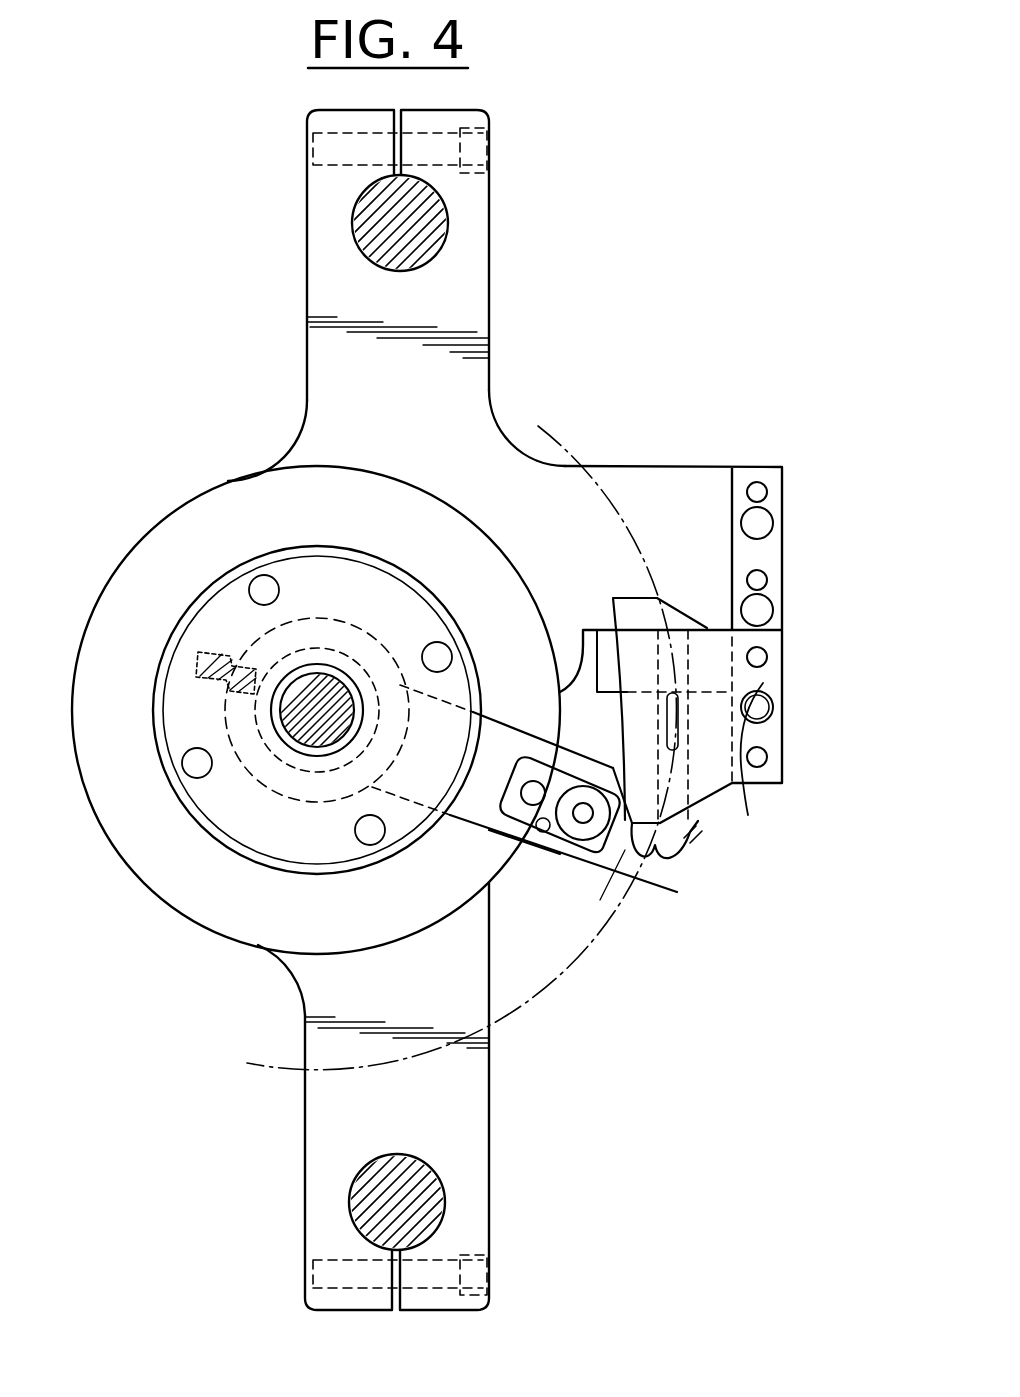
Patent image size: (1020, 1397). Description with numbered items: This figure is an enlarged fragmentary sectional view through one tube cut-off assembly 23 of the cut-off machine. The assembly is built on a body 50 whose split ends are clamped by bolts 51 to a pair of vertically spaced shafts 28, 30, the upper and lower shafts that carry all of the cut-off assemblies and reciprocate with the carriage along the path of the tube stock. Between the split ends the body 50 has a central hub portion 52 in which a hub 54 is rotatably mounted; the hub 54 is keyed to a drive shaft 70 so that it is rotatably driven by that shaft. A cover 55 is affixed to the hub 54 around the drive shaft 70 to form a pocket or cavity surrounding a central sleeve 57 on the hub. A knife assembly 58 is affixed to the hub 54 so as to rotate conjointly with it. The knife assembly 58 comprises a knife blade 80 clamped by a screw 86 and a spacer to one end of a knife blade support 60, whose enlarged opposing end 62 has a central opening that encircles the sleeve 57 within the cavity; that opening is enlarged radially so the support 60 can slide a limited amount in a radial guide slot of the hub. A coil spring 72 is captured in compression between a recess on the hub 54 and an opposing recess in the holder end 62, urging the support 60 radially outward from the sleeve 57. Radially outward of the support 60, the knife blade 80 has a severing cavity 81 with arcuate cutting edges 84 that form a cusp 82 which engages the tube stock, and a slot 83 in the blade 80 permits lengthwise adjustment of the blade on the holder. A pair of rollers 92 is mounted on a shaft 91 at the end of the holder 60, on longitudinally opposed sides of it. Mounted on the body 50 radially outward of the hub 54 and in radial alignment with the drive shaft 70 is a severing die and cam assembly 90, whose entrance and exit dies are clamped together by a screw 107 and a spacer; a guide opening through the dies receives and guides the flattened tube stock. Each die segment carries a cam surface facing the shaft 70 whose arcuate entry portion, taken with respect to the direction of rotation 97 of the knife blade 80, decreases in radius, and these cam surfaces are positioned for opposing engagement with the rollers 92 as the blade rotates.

The tube cut-off assembly 23 is at (550, 398).
The shaft 28 is at (430, 237).
The shaft 30 is at (433, 1203).
The body 50 is at (304, 399).
The bolt 51 is at (490, 149).
The central hub portion 52 is at (177, 527).
The hub 54 is at (230, 793).
The cover 55 is at (263, 848).
The central sleeve 57 is at (362, 670).
The knife assembly 58 is at (499, 845).
The knife blade support 60 is at (494, 733).
The opposing end 62 is at (298, 618).
The drive shaft 70 is at (316, 735).
The coil spring 72 is at (219, 650).
The knife blade 80 is at (678, 893).
The severing cavity 81 is at (680, 830).
The cusp 82 is at (645, 872).
The slot 83 is at (505, 788).
The arcuate cutting edges 84 is at (595, 891).
The screw 86 is at (538, 781).
The severing die and cam assembly 90 is at (672, 599).
The shaft 91 is at (587, 804).
The rollers 92 is at (568, 860).
The direction of rotation 97 is at (762, 856).
The screw 107 is at (770, 760).